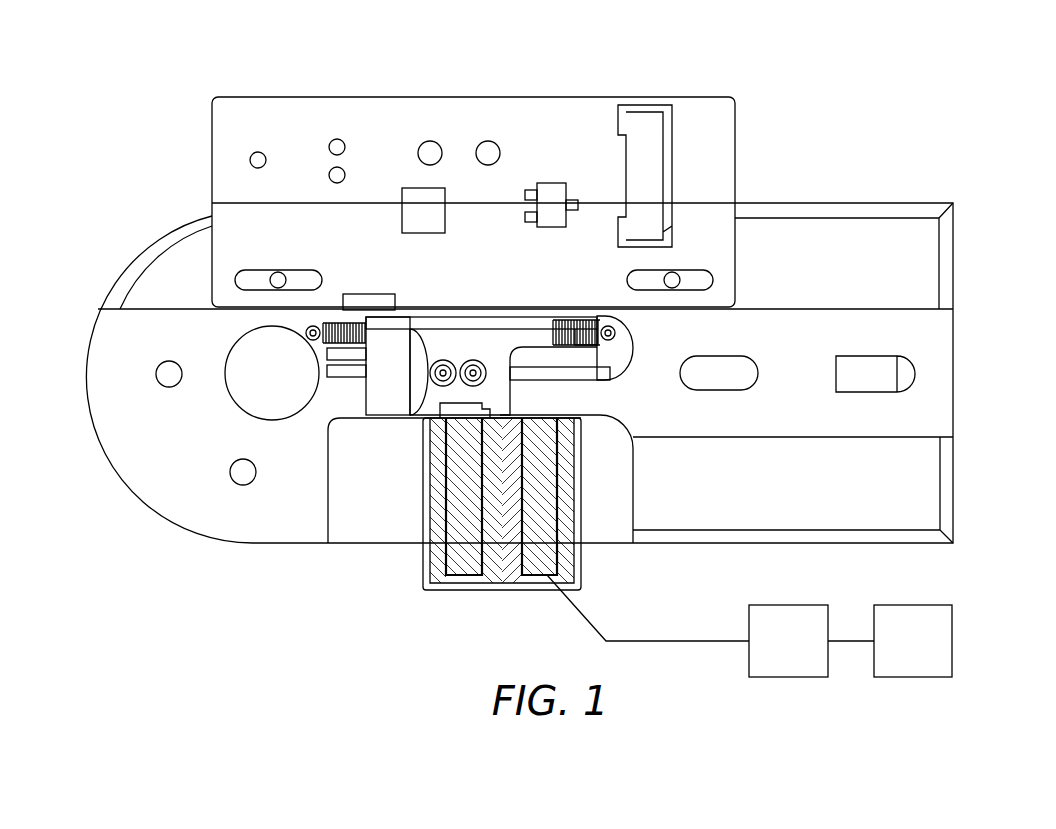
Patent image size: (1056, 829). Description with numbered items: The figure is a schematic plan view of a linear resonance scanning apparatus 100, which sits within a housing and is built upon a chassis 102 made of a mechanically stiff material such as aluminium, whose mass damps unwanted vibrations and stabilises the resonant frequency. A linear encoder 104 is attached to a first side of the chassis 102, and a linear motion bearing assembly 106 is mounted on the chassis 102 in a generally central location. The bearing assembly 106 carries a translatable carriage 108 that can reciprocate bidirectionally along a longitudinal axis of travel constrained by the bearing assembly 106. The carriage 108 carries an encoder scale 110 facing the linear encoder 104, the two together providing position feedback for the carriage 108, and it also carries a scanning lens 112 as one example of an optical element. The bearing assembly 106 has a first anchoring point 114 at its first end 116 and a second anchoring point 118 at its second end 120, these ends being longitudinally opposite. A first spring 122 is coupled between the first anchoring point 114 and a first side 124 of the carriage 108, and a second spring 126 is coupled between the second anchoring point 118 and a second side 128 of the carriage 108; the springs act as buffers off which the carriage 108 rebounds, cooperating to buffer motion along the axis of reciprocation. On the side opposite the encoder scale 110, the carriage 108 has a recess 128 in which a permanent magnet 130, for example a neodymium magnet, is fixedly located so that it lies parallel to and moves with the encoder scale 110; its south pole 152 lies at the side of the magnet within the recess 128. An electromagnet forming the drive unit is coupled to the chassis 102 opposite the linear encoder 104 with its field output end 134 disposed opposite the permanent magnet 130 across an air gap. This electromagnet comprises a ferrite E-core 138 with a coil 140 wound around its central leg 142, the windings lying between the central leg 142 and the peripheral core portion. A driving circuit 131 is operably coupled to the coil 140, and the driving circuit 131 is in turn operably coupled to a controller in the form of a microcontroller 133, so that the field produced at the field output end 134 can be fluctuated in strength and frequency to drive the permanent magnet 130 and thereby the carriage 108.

The apparatus 100 is at (133, 95).
The chassis 102 is at (955, 525).
The linear encoder 104 is at (737, 103).
The linear motion bearing assembly 106 is at (600, 372).
The translatable carriage 108 is at (495, 355).
The encoder scale 110 is at (445, 320).
The scanning lens 112 is at (384, 418).
The first anchoring point 114 is at (310, 338).
The first end 116 is at (268, 320).
The second anchoring point 118 is at (616, 335).
The second end 120 is at (648, 322).
The first spring 122 is at (350, 297).
The first side 124 is at (360, 392).
The second spring 126 is at (590, 318).
The recess 128 is at (562, 318).
The permanent magnet 130 is at (458, 421).
The driving circuit 131 is at (788, 641).
The microcontroller 133 is at (913, 641).
The field output end 134 is at (568, 412).
The core 138 is at (501, 531).
The coil 140 is at (455, 555).
The central leg 142 is at (515, 553).
The south pole 152 is at (455, 592).